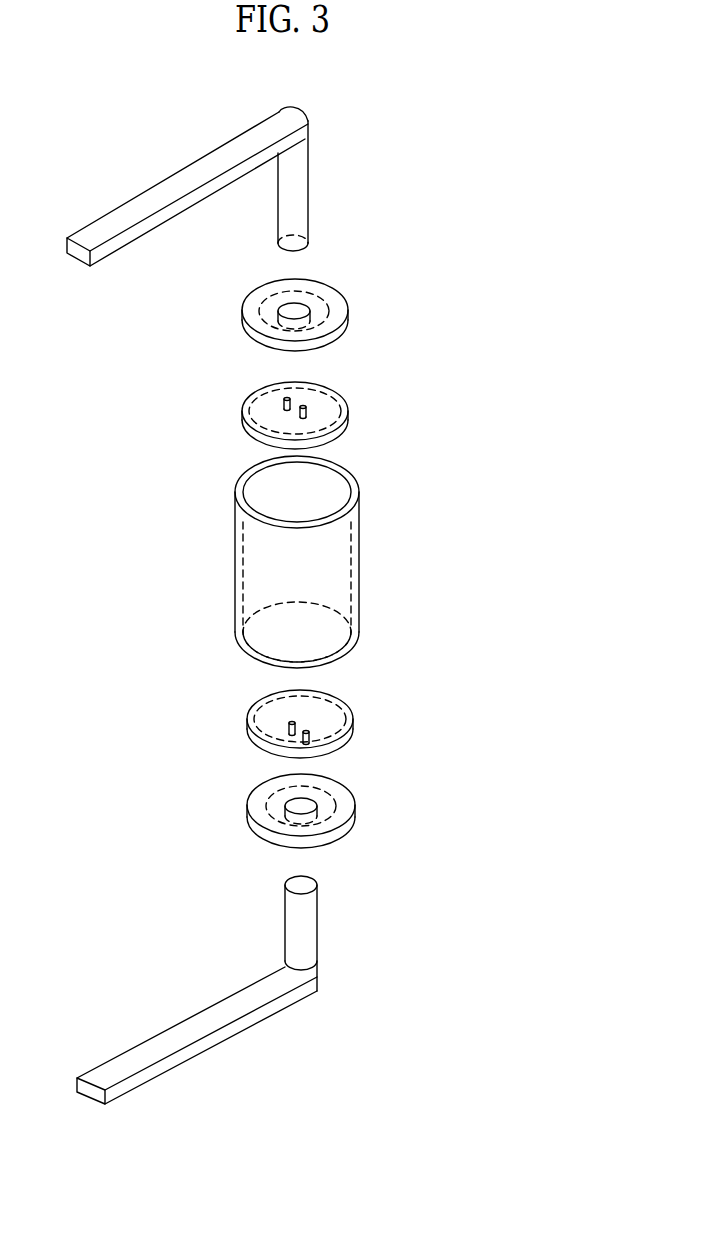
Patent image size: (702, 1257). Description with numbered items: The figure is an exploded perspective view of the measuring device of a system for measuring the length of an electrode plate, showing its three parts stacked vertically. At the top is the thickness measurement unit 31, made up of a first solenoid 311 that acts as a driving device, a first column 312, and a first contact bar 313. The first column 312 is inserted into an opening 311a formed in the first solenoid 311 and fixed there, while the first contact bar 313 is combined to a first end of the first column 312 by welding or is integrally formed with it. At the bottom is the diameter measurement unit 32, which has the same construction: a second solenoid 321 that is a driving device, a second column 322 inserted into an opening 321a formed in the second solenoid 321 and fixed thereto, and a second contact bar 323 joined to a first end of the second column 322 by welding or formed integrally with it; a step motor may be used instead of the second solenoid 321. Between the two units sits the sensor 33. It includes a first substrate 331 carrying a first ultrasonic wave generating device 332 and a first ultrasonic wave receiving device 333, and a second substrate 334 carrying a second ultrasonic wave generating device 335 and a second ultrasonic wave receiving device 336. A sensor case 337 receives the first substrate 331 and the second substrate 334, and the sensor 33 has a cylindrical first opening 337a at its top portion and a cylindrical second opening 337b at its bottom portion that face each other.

The thickness measurement unit 31 is at (547, 357).
The first solenoid 311 is at (268, 311).
The opening 311a is at (292, 311).
The first column 312 is at (302, 175).
The first contact bar 313 is at (120, 215).
The diameter measurement unit 32 is at (553, 880).
The second solenoid 321 is at (273, 809).
The opening 321a is at (300, 805).
The second column 322 is at (310, 930).
The second contact bar 323 is at (167, 1040).
The sensor 33 is at (549, 675).
The first substrate 331 is at (337, 418).
The first ultrasonic wave generating device 332 is at (284, 404).
The first ultrasonic wave receiving device 333 is at (306, 410).
The second substrate 334 is at (338, 720).
The second ultrasonic wave generating device 335 is at (288, 729).
The second ultrasonic wave receiving device 336 is at (312, 735).
The sensor case 337 is at (309, 571).
The first opening 337a is at (270, 491).
The second opening 337b is at (330, 640).